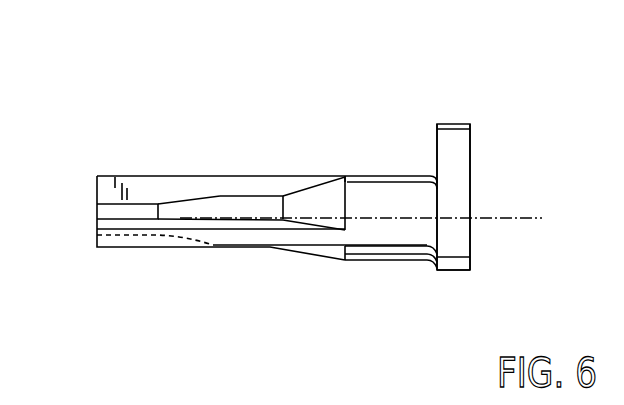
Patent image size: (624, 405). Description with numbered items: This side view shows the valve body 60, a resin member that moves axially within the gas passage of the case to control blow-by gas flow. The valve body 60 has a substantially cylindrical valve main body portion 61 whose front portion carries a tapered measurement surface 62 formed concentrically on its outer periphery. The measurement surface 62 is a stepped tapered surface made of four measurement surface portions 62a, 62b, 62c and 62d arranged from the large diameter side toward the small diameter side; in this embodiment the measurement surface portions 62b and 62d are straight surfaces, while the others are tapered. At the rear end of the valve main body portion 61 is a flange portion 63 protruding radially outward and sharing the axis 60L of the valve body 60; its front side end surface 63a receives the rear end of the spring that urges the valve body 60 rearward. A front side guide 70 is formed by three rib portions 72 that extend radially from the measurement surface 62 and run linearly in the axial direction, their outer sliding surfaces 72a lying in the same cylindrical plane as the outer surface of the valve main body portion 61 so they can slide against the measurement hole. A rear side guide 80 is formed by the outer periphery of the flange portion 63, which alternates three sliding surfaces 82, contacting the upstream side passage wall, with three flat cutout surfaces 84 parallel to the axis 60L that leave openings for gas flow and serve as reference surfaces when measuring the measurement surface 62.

The valve body 60 is at (322, 106).
The axis 60L is at (384, 218).
The valve main body portion 61 is at (388, 244).
The measurement surface 62 is at (237, 195).
The measurement surface portion 62a is at (318, 207).
The measurement surface portion 62b is at (263, 207).
The measurement surface portion 62c is at (188, 210).
The measurement surface portion 62d is at (108, 212).
The flange portion 63 is at (468, 160).
The front side end surface 63a is at (437, 150).
The front side guide 70 is at (115, 171).
The rib portions 72 is at (110, 190).
The sliding surfaces 72a is at (152, 176).
The rear side guide 80 is at (477, 125).
The sliding surfaces 82 is at (452, 123).
The cutout surfaces 84 is at (455, 238).